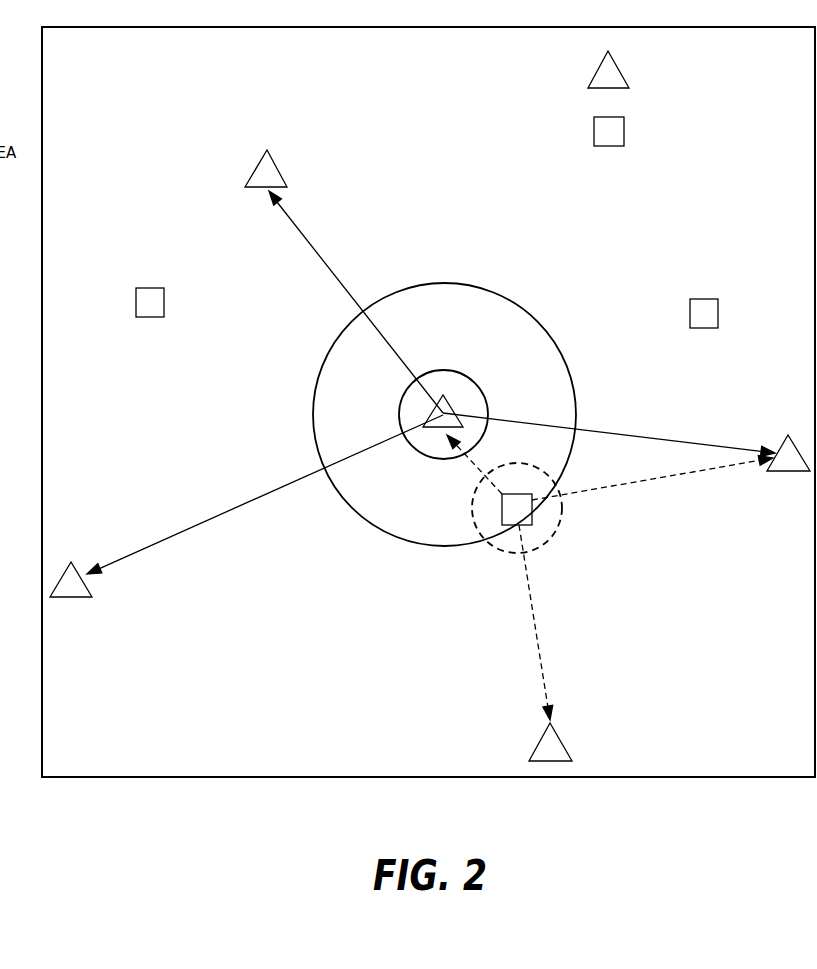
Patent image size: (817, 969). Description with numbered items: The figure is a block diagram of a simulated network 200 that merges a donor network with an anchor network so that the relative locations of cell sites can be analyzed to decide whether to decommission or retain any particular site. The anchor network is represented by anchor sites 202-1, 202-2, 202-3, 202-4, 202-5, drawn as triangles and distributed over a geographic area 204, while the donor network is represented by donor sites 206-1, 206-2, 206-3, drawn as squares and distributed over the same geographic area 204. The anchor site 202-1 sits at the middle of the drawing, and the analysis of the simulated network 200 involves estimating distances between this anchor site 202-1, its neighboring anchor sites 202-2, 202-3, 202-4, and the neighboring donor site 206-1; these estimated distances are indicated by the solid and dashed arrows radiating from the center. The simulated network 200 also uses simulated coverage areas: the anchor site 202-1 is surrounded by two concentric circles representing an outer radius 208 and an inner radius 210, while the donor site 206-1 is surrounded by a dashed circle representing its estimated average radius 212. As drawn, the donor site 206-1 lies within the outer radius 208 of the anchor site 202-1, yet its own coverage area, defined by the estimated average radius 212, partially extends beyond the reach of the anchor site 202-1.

The simulated network 200 is at (428, 392).
The geographic area 204 is at (477, 128).
The anchor site 202-1 is at (450, 392).
The anchor site 202-2 is at (281, 167).
The anchor site 202-3 is at (70, 598).
The anchor site 202-4 is at (560, 740).
The anchor site 202-5 is at (790, 472).
The donor site 206-1 is at (502, 509).
The donor site 206-2 is at (718, 318).
The donor site 206-3 is at (164, 297).
The outer radius 208 is at (507, 300).
The inner radius 210 is at (468, 377).
The estimated average radius 212 is at (550, 540).